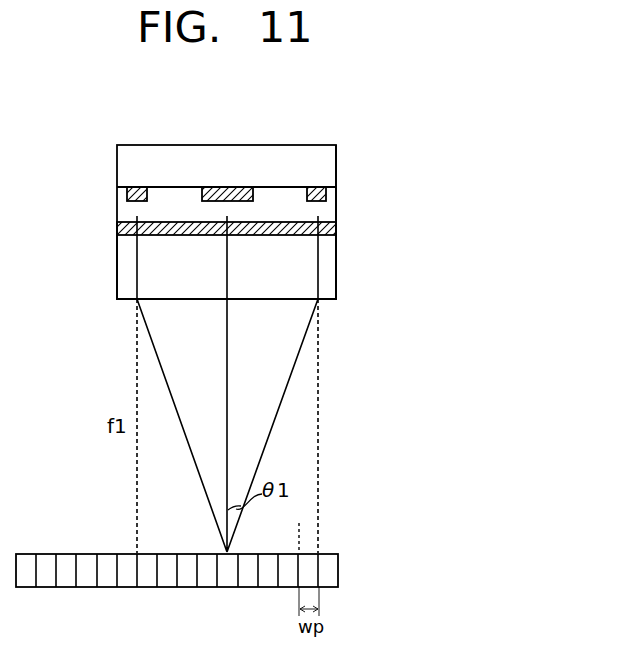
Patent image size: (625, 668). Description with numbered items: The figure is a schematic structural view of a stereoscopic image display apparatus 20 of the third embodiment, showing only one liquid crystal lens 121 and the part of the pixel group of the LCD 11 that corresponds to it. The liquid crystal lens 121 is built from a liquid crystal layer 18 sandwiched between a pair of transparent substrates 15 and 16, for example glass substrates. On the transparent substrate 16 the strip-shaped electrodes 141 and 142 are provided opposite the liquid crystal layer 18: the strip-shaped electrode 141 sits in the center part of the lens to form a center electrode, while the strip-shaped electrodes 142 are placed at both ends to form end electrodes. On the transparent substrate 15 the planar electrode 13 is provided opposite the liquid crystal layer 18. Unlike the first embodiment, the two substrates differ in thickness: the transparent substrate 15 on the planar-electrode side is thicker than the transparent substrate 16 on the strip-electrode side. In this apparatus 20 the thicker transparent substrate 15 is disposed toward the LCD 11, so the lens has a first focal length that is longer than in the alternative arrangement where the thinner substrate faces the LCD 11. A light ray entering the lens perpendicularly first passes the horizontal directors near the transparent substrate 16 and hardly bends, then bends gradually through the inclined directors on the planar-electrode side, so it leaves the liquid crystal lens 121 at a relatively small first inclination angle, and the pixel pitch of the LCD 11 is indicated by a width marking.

The stereoscopic image display apparatus 20 is at (350, 121).
The transparent substrate 16 is at (328, 166).
The strip-shaped electrode 141 is at (242, 190).
The strip-shaped electrodes 142 is at (127, 193).
The liquid crystal layer 18 is at (128, 215).
The planar electrode 13 is at (328, 232).
The transparent substrate 15 is at (328, 282).
The liquid crystal lens 121 is at (582, 189).
The LCD 11 is at (338, 570).